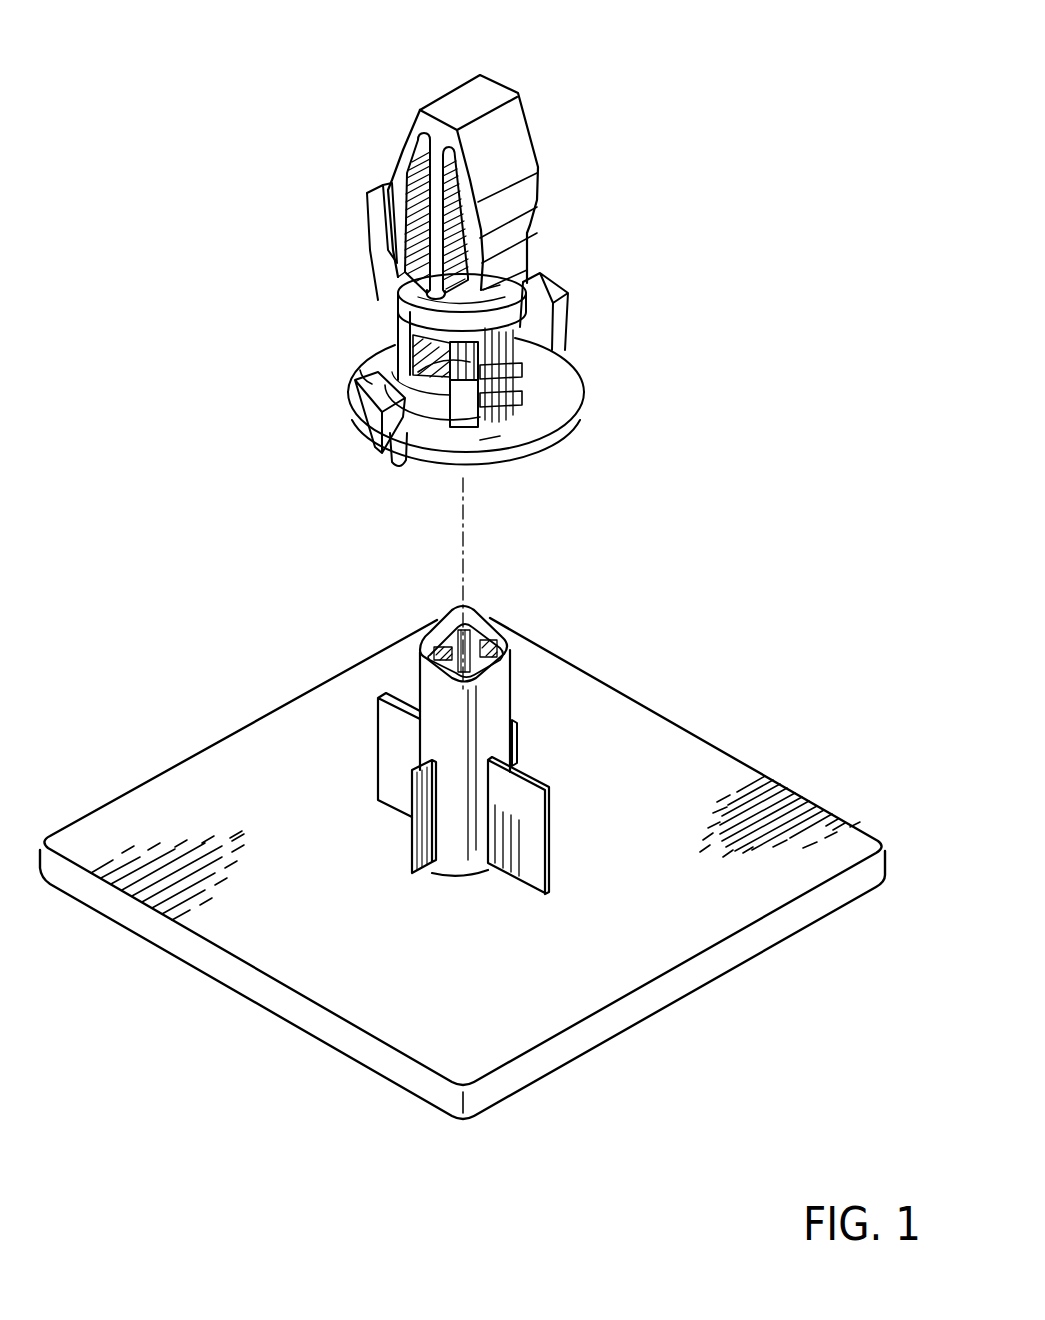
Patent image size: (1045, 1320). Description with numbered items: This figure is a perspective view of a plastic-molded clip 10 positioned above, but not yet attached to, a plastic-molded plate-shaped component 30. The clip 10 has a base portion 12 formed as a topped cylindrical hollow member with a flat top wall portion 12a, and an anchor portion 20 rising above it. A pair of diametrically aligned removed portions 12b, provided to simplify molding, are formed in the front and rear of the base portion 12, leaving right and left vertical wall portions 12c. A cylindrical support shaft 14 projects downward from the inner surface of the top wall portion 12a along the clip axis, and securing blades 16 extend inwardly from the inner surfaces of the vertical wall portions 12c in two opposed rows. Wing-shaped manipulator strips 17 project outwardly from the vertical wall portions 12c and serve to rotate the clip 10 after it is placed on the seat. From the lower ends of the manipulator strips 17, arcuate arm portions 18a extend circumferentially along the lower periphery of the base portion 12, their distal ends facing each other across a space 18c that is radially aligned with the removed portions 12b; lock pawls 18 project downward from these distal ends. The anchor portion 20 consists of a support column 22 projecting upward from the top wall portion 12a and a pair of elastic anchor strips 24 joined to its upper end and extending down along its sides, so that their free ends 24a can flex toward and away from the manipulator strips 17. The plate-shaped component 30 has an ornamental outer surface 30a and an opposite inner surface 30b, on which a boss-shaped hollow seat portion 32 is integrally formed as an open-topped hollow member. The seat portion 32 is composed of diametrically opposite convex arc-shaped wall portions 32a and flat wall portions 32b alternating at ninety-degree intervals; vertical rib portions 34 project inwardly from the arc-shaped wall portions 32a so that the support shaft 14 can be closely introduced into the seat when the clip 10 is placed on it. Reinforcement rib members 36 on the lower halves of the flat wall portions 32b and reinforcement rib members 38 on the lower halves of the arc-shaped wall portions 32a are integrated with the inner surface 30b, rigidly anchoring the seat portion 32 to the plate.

The clip 10 is at (355, 100).
The base portion 12 is at (555, 369).
The top wall portion 12a is at (393, 282).
The removed portions 12b is at (450, 395).
The vertical wall portions 12c is at (464, 384).
The support shaft 14 is at (395, 418).
The securing blades 16 is at (408, 350).
The manipulator strips 17 is at (375, 217).
The lock pawls 18 is at (380, 462).
The arm portions 18a is at (372, 368).
The space 18c is at (400, 470).
The anchor portion 20 is at (548, 170).
The support column 22 is at (403, 238).
The elastic anchor strips 24 is at (412, 148).
The free ends 24a is at (395, 260).
The plate-shaped component 30 is at (663, 1007).
The outer surface 30a is at (330, 1053).
The inner surface 30b is at (215, 785).
The hollow seat portion 32 is at (530, 688).
The arc-shaped wall portions 32a is at (514, 670).
The flat wall portions 32b is at (413, 690).
The rib portions 34 is at (445, 643).
The reinforcement rib members 36 is at (390, 738).
The reinforcement rib members 38 is at (425, 798).